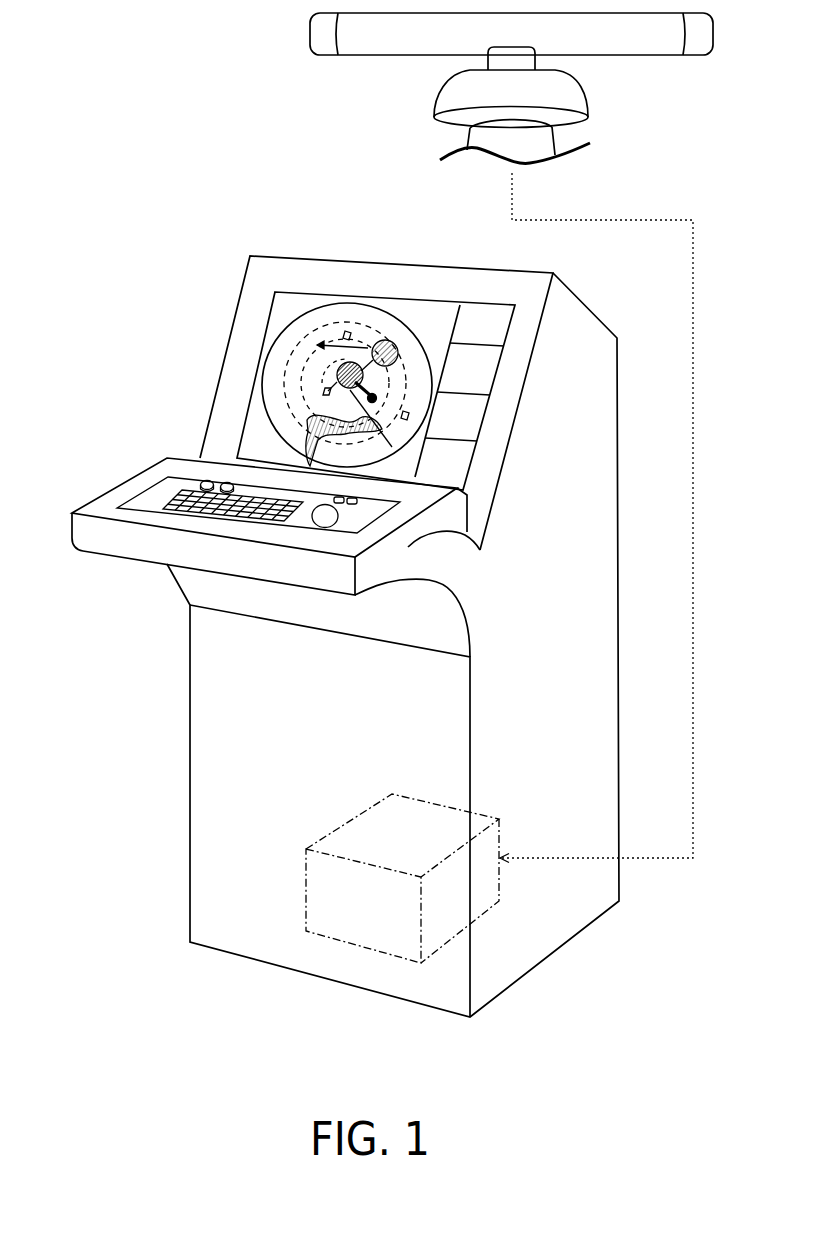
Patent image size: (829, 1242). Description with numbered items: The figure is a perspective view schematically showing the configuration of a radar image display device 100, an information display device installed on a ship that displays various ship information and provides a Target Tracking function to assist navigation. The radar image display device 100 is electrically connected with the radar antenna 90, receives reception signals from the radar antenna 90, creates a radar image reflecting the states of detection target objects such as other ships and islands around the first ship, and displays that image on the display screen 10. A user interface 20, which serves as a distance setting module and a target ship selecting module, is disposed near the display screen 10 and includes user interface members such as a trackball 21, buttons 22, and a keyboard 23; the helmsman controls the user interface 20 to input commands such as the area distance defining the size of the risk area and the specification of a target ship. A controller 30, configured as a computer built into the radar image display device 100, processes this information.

The radar image display device 100 is at (155, 202).
The display screen 10 is at (253, 342).
The user interface 20 is at (250, 490).
The trackball 21 is at (338, 509).
The buttons 22 is at (205, 480).
The keyboard 23 is at (167, 502).
The controller 30 is at (347, 809).
The radar antenna 90 is at (618, 97).